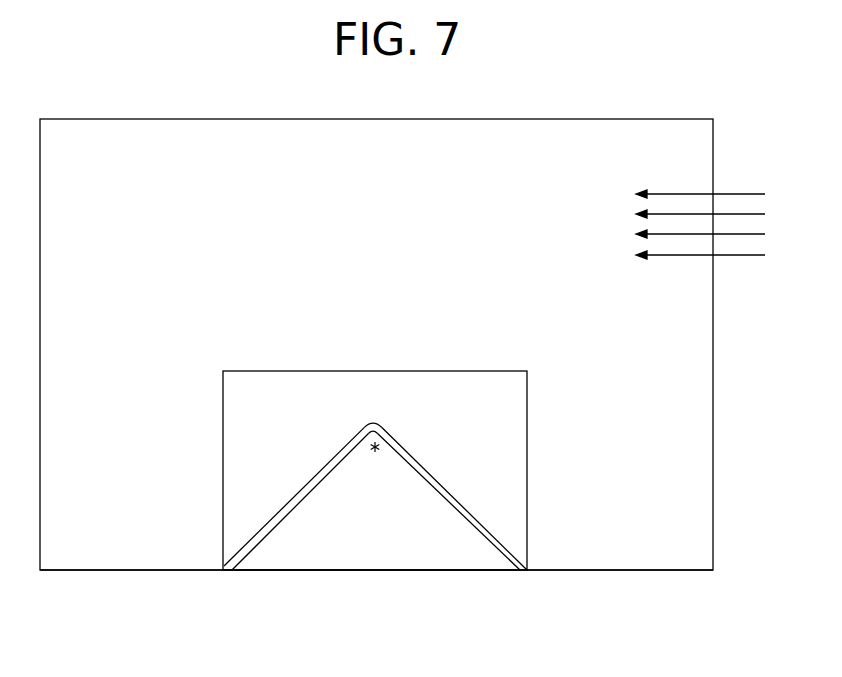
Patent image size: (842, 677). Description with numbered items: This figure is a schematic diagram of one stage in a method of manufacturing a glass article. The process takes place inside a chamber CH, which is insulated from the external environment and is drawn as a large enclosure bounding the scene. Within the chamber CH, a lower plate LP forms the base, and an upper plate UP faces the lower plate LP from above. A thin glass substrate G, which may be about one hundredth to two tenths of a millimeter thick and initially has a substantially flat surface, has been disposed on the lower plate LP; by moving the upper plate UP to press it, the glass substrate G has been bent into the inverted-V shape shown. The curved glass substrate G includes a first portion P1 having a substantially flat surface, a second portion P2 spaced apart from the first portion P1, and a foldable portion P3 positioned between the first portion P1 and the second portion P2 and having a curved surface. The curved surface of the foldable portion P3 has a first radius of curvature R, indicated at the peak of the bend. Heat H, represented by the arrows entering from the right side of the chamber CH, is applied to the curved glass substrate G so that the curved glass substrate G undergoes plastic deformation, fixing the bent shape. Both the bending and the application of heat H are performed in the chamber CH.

The chamber CH is at (630, 570).
The lower plate LP is at (374, 554).
The upper plate UP is at (515, 464).
The heat H is at (711, 224).
The glass substrate G is at (375, 414).
The first portion P1 is at (307, 481).
The second portion P2 is at (439, 481).
The foldable portion P3 is at (373, 422).
The first radius of curvature R is at (385, 455).